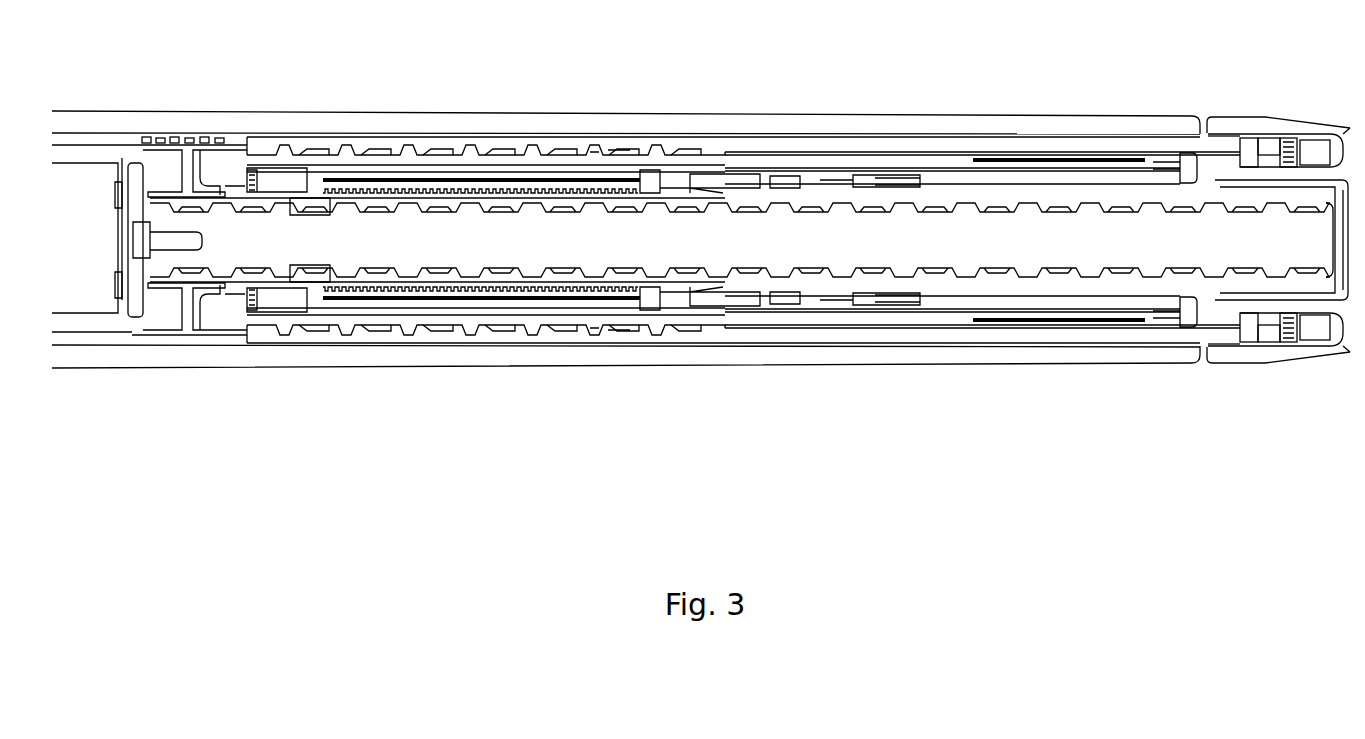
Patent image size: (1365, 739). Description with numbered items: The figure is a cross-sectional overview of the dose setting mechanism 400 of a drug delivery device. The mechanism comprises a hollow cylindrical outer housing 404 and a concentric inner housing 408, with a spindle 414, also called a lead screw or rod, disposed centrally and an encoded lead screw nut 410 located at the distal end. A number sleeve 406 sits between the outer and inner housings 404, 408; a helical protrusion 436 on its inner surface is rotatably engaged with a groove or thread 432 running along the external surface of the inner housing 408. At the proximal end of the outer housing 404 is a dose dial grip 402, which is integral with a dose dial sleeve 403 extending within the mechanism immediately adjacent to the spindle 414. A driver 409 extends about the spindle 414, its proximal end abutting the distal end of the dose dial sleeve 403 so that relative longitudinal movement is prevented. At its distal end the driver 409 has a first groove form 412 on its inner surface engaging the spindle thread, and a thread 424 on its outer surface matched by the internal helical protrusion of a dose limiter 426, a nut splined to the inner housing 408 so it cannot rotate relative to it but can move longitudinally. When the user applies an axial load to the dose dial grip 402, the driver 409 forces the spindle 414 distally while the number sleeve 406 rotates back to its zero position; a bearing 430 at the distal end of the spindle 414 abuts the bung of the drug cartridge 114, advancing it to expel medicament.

The drug cartridge 114 is at (90, 325).
The dose setting mechanism 400 is at (994, 447).
The dose dial grip 402 is at (1248, 128).
The dose dial sleeve 403 is at (1087, 192).
The outer housing 404 is at (410, 128).
The number sleeve 406 is at (763, 145).
The inner housing 408 is at (762, 315).
The driver 409 is at (658, 300).
The encoded lead screw nut 410 is at (190, 150).
The first groove form 412 is at (325, 275).
The spindle 414 is at (456, 248).
The thread 424 is at (383, 290).
The dose limiter 426 is at (283, 178).
The bearing 430 is at (140, 302).
The thread 432 is at (597, 152).
The helical protrusion 436 is at (604, 152).